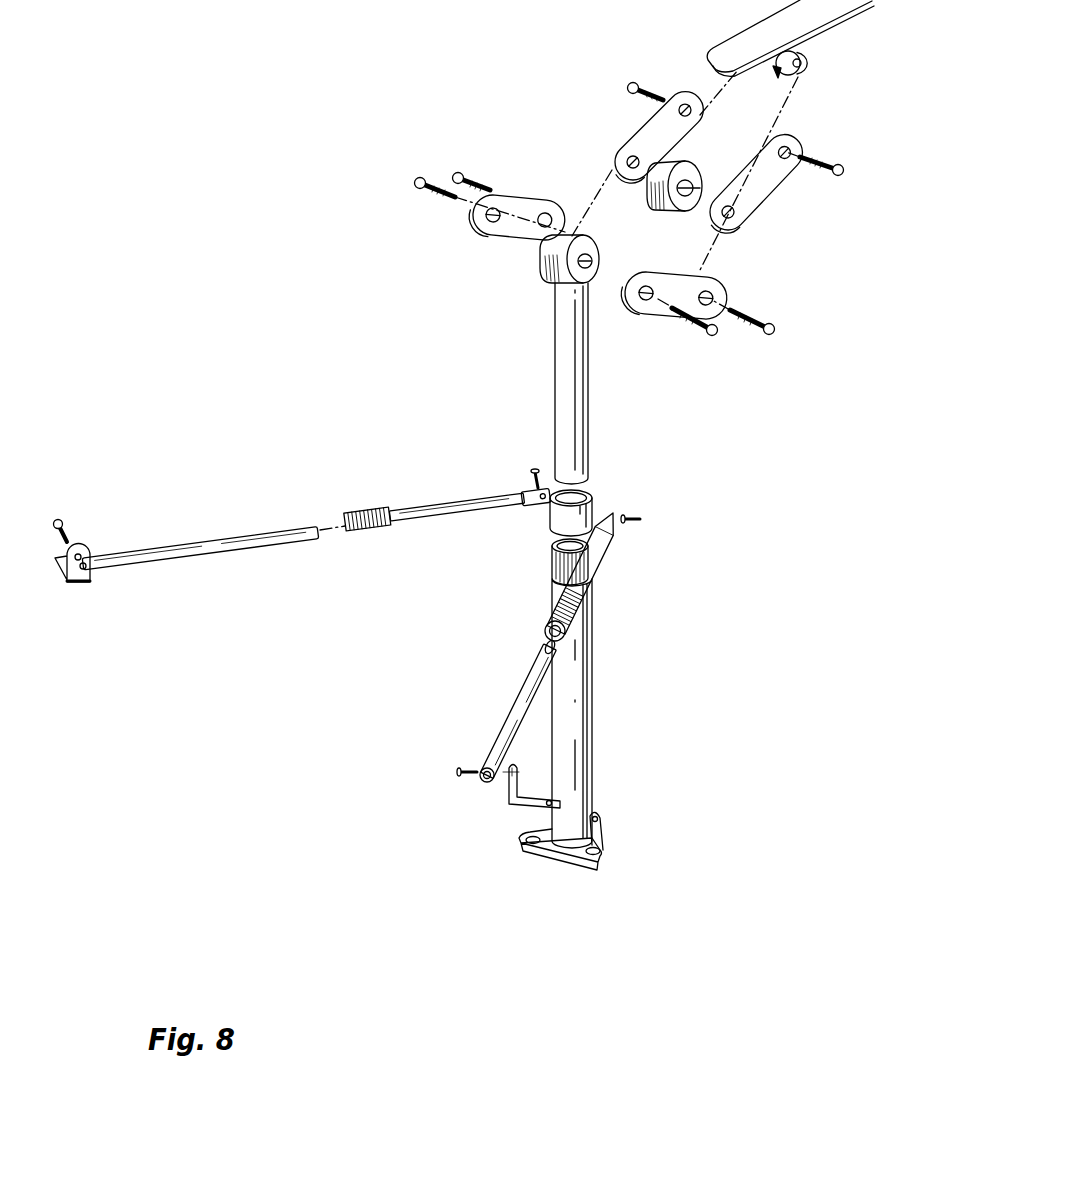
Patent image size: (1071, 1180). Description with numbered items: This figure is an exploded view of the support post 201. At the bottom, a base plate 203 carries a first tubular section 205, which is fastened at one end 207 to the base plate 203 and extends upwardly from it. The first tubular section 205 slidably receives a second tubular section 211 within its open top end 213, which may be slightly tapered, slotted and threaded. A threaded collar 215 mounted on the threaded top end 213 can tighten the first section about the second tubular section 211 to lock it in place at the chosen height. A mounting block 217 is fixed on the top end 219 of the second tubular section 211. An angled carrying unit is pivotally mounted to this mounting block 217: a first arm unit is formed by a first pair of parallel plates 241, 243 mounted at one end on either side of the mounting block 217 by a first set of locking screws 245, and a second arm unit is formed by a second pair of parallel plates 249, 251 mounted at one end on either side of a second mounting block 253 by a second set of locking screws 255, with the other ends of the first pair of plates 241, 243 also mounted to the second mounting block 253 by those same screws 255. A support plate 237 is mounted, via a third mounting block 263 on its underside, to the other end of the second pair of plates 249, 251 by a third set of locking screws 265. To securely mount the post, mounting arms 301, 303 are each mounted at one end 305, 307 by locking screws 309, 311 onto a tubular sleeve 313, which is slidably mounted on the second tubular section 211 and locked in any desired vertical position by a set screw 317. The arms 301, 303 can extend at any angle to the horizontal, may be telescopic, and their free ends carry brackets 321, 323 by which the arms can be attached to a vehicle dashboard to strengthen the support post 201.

The support post 201 is at (715, 543).
The base plate 203 is at (547, 865).
The first tubular section 205 is at (597, 743).
The one end of the first tubular section 207 is at (603, 843).
The second tubular section 211 is at (552, 398).
The top end of the first tubular section 213 is at (550, 584).
The threaded collar 215 is at (557, 582).
The mounting block 217 is at (543, 252).
The top end of the second tubular section 219 is at (556, 283).
The support plate 237 is at (848, 37).
The first parallel plate 241 is at (713, 275).
The first parallel plate 243 is at (535, 202).
The first set of locking screws 245 is at (415, 187).
The second parallel plate 249 is at (755, 188).
The second parallel plate 251 is at (657, 130).
The second mounting block 253 is at (647, 196).
The second set of locking screws 255 is at (452, 178).
The third mounting block 263 is at (805, 63).
The third set of locking screws 265 is at (631, 88).
The mounting arm 301 is at (513, 713).
The mounting arm 303 is at (468, 495).
The one end of the mounting arm 305 is at (615, 510).
The one end of the mounting arm 307 is at (556, 497).
The locking screw 309 is at (642, 519).
The locking screw 311 is at (532, 470).
The tubular sleeve 313 is at (585, 498).
The set screw 317 is at (543, 570).
The bracket 321 is at (520, 803).
The bracket 323 is at (91, 548).